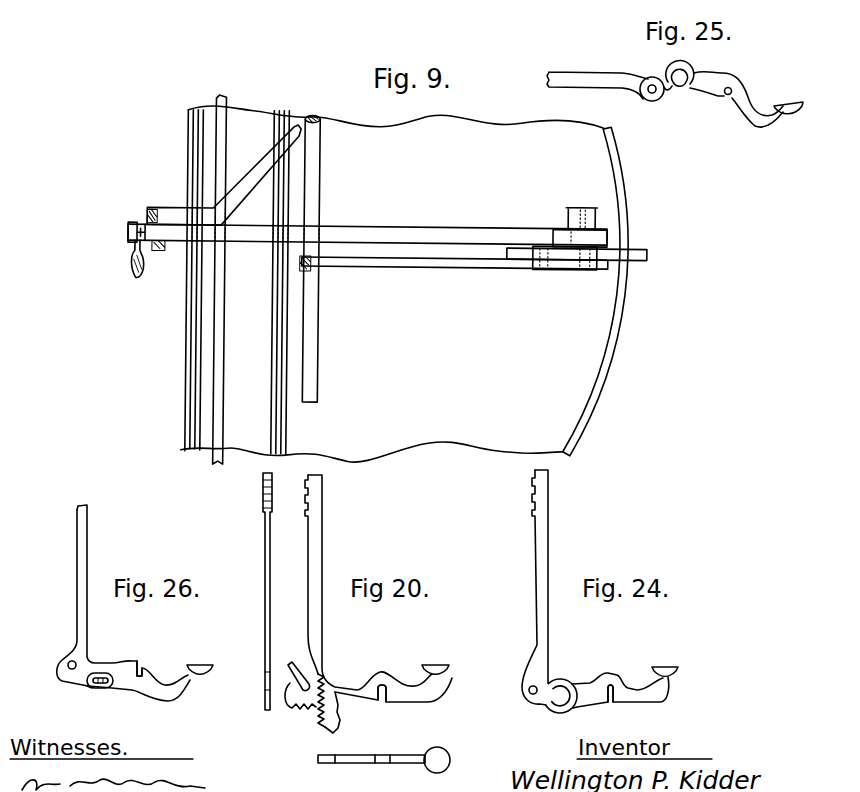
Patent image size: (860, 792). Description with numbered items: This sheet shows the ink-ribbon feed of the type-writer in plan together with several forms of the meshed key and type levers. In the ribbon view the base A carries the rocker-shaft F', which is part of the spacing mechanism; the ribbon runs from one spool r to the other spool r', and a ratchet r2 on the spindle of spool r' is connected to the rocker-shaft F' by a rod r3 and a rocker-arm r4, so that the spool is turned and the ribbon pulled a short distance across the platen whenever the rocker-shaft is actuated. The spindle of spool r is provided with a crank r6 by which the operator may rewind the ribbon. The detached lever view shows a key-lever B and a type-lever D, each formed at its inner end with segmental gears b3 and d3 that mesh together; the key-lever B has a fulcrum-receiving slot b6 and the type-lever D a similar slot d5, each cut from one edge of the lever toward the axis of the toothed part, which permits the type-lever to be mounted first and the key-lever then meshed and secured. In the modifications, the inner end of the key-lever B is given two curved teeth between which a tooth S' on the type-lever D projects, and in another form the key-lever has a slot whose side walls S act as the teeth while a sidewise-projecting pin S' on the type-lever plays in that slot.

In FIG. 9, the base A is at (405, 285).
In FIG. 9, the rocker-shaft F' is at (319, 259).
In FIG. 9, the spool r is at (355, 238).
In FIG. 9, the spool r' is at (580, 228).
In FIG. 9, the ratchet r2 is at (583, 256).
In FIG. 9, the rod r3 is at (452, 267).
In FIG. 9, the rocker-arm r4 is at (312, 271).
In FIG. 9, the crank r6 is at (143, 275).
In FIG. 25, the type-lever D is at (605, 77).
In FIG. 26, the type-lever D is at (123, 598).
In FIG. 20, the type-lever D is at (357, 585).
In FIG. 24, the type-lever D is at (600, 585).
In FIG. 25, the side walls of slot S is at (685, 66).
In FIG. 26, the side walls of slot S is at (103, 666).
In FIG. 25, the tooth or pin S' is at (661, 71).
In FIG. 26, the tooth or pin S' is at (84, 702).
In FIG. 25, the key-lever B is at (788, 101).
In FIG. 26, the key-lever B is at (200, 667).
In FIG. 20, the key-lever B is at (436, 667).
In FIG. 25, the fulcrum-receiving slot b6 is at (726, 95).
In FIG. 26, the fulcrum-receiving slot b6 is at (143, 672).
In FIG. 20, the fulcrum-receiving slot b6 is at (382, 686).
In FIG. 24, the fulcrum-receiving slot b6 is at (616, 684).
In FIG. 20, the segmental gear b3 is at (333, 717).
In FIG. 20, the segmental gear d3 is at (300, 710).
In FIG. 20, the fulcrum-receiving slot d5 is at (297, 676).